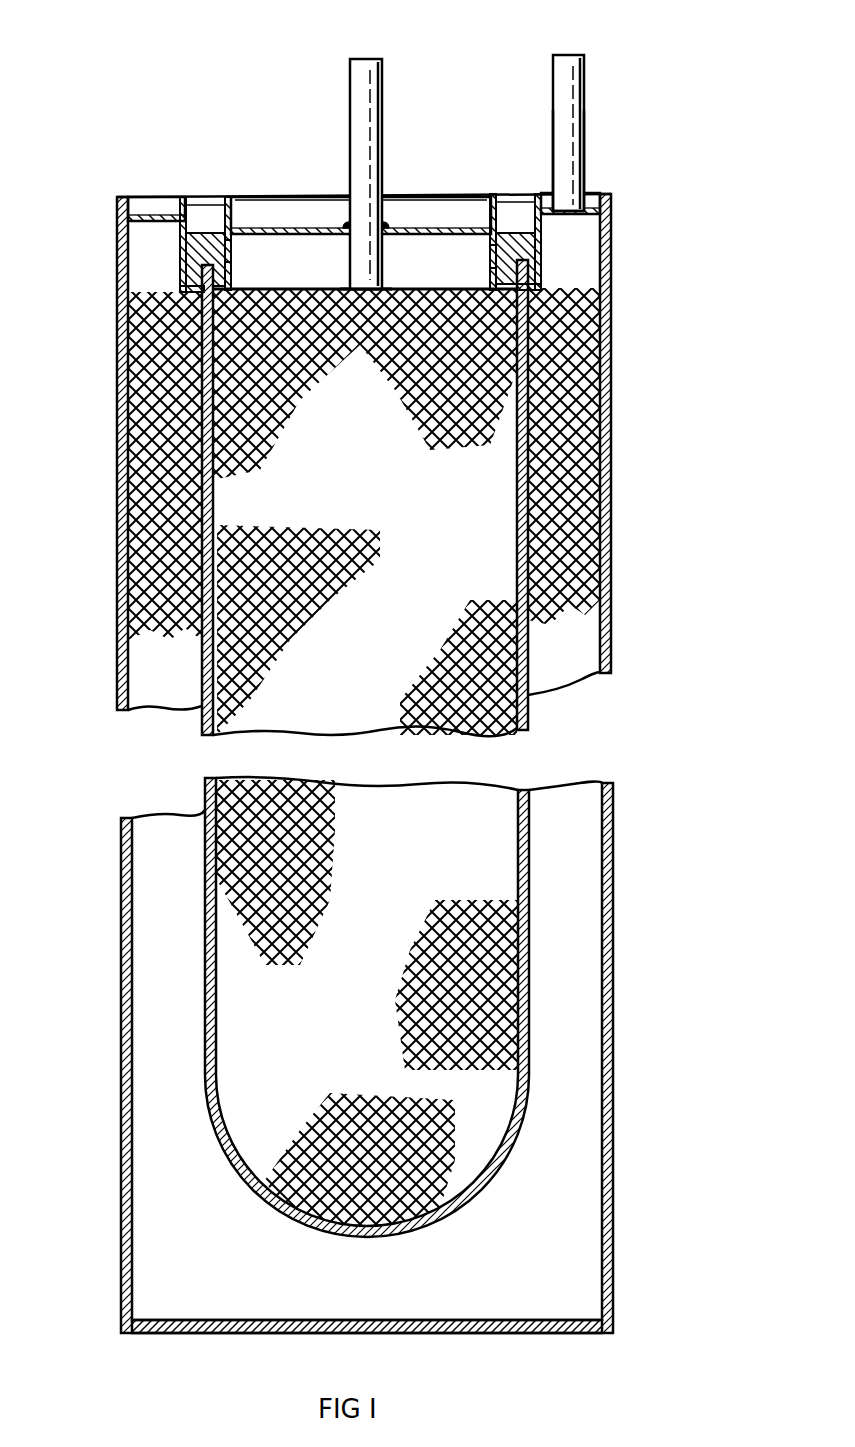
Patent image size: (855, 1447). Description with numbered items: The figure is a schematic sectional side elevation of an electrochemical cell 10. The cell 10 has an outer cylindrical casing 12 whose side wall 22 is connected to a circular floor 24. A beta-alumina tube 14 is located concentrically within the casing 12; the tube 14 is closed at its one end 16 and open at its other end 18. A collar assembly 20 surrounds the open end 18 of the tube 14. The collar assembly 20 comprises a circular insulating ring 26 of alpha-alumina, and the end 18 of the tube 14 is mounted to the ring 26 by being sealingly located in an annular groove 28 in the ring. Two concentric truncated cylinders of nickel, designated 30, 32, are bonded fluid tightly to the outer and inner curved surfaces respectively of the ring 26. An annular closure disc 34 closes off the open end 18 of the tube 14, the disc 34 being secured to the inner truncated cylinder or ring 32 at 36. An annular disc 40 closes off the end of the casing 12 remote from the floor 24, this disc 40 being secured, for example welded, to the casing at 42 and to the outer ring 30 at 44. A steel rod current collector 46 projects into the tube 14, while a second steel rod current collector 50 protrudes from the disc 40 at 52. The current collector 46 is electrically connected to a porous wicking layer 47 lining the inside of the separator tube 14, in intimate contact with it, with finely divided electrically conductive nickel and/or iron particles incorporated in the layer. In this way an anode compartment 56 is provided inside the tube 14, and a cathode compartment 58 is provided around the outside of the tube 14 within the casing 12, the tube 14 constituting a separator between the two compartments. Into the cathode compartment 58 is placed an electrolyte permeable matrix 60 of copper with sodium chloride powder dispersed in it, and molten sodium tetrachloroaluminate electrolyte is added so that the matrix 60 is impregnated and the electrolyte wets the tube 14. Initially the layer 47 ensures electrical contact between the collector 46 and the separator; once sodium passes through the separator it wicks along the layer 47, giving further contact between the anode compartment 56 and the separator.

The electrochemical cell 10 is at (704, 76).
The outer cylindrical casing 12 is at (630, 601).
The beta-alumina tube 14 is at (522, 565).
The closed end of tube 16 is at (313, 1240).
The open end of tube 18 is at (318, 324).
The collar assembly 20 is at (164, 284).
The side wall 22 is at (614, 1000).
The circular floor 24 is at (485, 1324).
The circular insulating ring 26 is at (178, 262).
The annular groove 28 is at (231, 262).
The outer truncated cylinder of nickel 30 is at (178, 234).
The inner truncated cylinder of nickel 32 is at (232, 258).
The annular closure disc 34 is at (324, 232).
The securing location of closure disc 36 is at (214, 210).
The annular disc 40 is at (158, 197).
The securing location to casing 42 is at (100, 216).
The securing location to outer ring 44 is at (192, 212).
The steel rod current collector 46 is at (372, 98).
The porous wicking layer 47 is at (408, 306).
The steel rod current collector 50 is at (570, 97).
The protrusion location of current collector 52 is at (567, 200).
The anode compartment 56 is at (486, 526).
The cathode compartment 58 is at (568, 868).
The electrolyte permeable matrix 60 is at (164, 566).